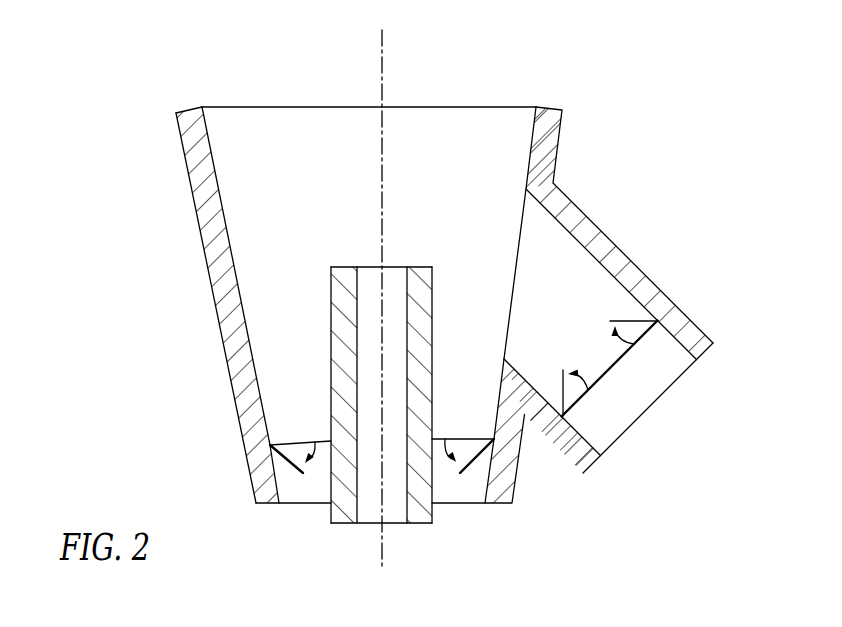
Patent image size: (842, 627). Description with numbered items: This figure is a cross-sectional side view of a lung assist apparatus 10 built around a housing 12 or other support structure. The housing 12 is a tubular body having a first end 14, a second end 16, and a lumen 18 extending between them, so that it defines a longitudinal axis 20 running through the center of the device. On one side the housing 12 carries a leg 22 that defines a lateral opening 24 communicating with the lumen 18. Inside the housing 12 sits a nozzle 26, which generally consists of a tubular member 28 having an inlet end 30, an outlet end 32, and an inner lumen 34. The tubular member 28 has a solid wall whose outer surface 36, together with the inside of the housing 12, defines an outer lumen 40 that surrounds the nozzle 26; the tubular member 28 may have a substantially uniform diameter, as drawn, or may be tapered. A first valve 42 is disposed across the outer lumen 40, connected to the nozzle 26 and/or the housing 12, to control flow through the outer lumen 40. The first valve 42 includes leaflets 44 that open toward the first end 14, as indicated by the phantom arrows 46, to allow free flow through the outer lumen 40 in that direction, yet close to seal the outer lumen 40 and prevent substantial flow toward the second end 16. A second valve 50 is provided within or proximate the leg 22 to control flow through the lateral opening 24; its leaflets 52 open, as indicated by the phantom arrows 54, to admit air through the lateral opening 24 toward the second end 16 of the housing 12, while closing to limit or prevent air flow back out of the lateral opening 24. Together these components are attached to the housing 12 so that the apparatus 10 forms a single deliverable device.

The lung assist apparatus 10 is at (163, 305).
The housing 12 is at (194, 220).
The first end 14 is at (256, 497).
The second end 16 is at (185, 160).
The lumen 18 is at (213, 158).
The longitudinal axis 20 is at (384, 83).
The leg 22 is at (681, 310).
The lateral opening 24 is at (685, 360).
The nozzle 26 is at (326, 368).
The tubular member 28 is at (331, 300).
The inlet end 30 is at (329, 493).
The outlet end 32 is at (331, 274).
The inner lumen 34 is at (398, 508).
The outer surface 36 is at (331, 336).
The outer lumen 40 is at (489, 301).
The first valve 42 is at (286, 430).
The leaflets 44 is at (480, 455).
The arrows 46 is at (453, 470).
The second valve 50 is at (589, 406).
The leaflets 52 is at (636, 342).
The arrows 54 is at (570, 372).